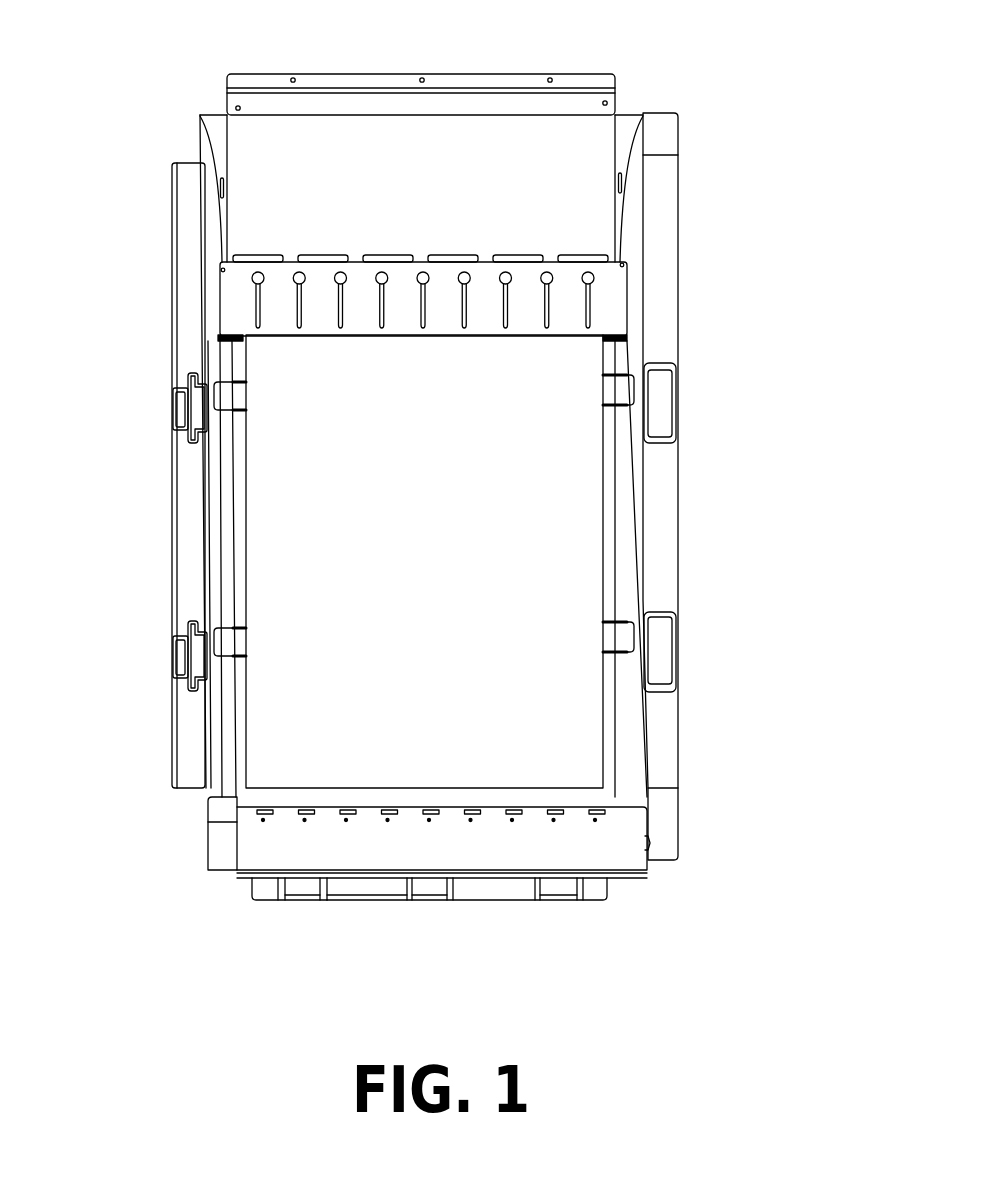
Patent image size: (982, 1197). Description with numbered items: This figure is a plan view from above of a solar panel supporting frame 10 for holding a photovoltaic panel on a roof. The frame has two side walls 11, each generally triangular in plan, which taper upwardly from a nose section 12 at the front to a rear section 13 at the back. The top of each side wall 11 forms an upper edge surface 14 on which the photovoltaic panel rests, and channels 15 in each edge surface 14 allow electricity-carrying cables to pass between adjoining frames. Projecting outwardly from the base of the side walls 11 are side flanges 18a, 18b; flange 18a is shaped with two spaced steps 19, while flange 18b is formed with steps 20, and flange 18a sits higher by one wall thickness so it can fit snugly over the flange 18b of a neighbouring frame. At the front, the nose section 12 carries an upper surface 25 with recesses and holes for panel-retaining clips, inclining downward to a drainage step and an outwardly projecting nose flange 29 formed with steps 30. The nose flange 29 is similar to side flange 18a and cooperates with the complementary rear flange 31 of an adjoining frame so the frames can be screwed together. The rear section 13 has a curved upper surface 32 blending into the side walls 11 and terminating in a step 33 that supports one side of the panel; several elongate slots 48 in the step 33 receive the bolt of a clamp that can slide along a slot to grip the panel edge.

The solar panel supporting frame 10 is at (708, 198).
The side wall 11 is at (632, 352).
The nose section 12 is at (215, 913).
The rear section 13 is at (630, 80).
The upper edge surface 14 is at (620, 528).
The channel 15 is at (620, 393).
The side flange 18a is at (668, 718).
The side flange 18b is at (175, 727).
The step 19 is at (660, 647).
The step 20 is at (200, 407).
The upper surface 25 is at (618, 832).
The nose flange 29 is at (505, 887).
The step 30 is at (302, 885).
The rear flange 31 is at (225, 85).
The upper surface 32 is at (590, 158).
The step 33 is at (603, 288).
The elongate slot 48 is at (298, 305).